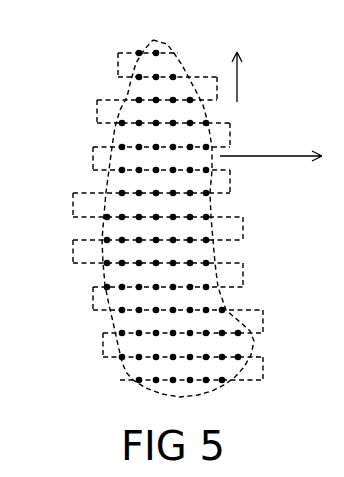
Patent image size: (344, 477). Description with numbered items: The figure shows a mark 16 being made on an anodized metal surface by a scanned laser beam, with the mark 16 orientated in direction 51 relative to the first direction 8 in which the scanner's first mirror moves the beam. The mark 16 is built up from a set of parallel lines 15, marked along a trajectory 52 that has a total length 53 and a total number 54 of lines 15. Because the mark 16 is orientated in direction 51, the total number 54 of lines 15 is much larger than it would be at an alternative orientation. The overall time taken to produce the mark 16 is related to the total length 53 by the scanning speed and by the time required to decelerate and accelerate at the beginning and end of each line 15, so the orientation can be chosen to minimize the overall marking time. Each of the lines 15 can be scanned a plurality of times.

The first direction 8 is at (282, 155).
The lines 15 is at (137, 99).
The mark 16 is at (252, 345).
The direction 51 is at (237, 83).
The trajectory 52 is at (243, 231).
The total length 53 is at (181, 53).
The total number of lines 54 is at (156, 203).